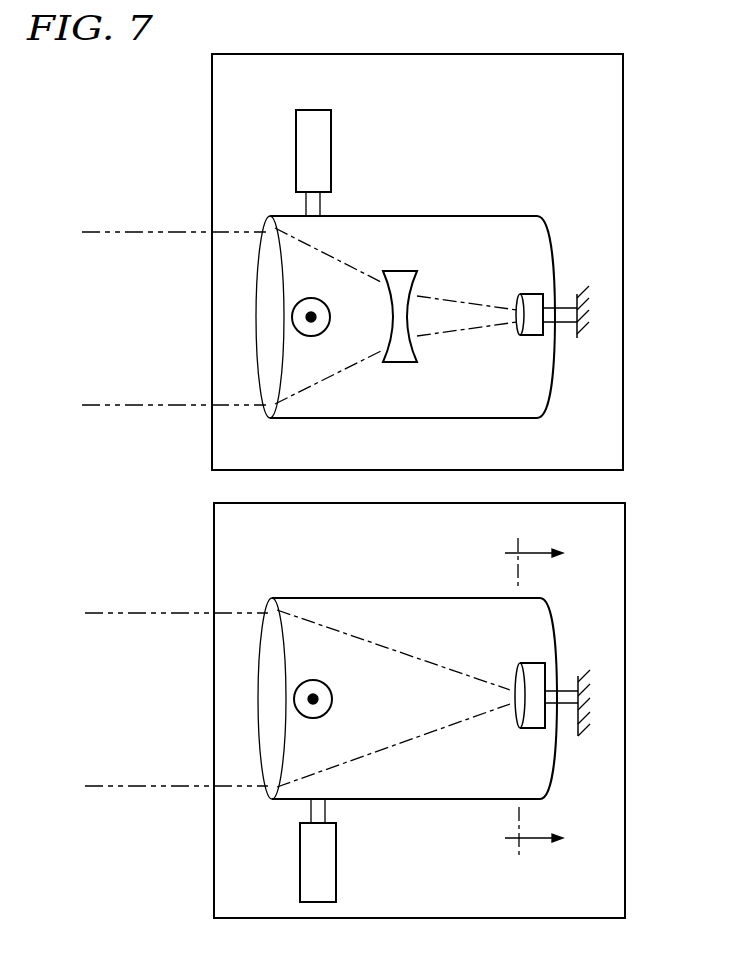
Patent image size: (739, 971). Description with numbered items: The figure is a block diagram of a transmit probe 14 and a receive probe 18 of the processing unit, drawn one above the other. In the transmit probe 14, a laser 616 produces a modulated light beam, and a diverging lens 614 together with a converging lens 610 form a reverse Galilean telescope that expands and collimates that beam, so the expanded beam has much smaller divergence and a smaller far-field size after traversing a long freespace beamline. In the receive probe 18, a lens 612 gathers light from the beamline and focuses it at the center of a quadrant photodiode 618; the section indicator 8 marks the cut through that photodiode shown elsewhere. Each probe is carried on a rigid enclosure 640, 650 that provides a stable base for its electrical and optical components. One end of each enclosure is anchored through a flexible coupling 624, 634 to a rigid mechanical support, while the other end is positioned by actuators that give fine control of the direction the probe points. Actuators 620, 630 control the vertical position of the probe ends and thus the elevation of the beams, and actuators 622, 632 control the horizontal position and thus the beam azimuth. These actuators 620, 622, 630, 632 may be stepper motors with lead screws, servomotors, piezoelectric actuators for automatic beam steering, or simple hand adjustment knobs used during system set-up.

The transmit probe 14 is at (624, 70).
The receive probe 18 is at (626, 525).
The section line for FIG. 8 is at (541, 697).
The converging lens 610 is at (270, 216).
The lens 612 is at (272, 598).
The diverging lens 614 is at (405, 271).
The laser 616 is at (526, 293).
The quadrant photodiode 618 is at (526, 663).
The actuator 620 is at (332, 148).
The actuator 622 is at (331, 317).
The flexible coupling 624 is at (563, 325).
The actuator 630 is at (337, 866).
The actuator 632 is at (333, 699).
The flexible coupling 634 is at (575, 708).
The rigid enclosure 640 is at (555, 246).
The rigid enclosure 650 is at (558, 619).